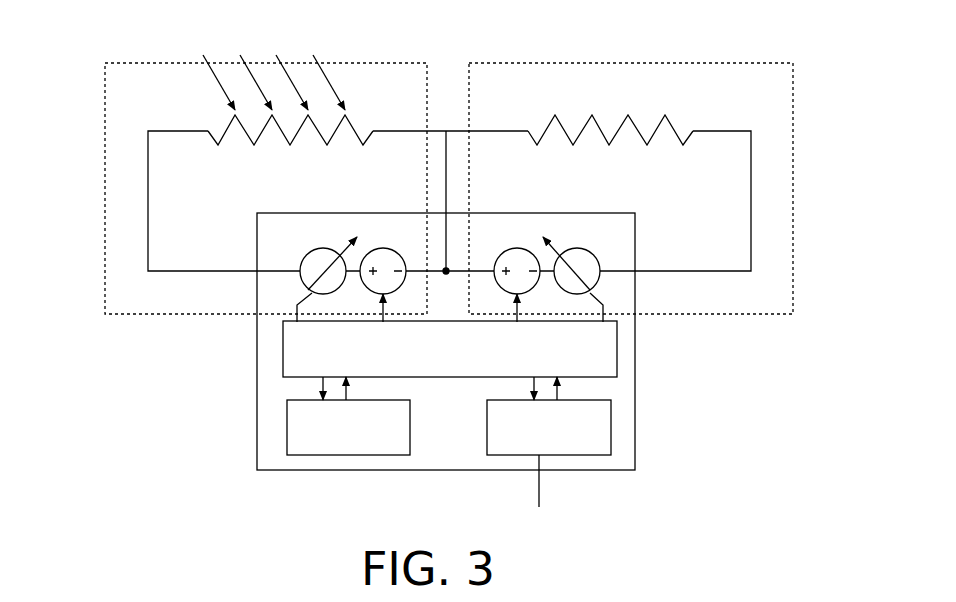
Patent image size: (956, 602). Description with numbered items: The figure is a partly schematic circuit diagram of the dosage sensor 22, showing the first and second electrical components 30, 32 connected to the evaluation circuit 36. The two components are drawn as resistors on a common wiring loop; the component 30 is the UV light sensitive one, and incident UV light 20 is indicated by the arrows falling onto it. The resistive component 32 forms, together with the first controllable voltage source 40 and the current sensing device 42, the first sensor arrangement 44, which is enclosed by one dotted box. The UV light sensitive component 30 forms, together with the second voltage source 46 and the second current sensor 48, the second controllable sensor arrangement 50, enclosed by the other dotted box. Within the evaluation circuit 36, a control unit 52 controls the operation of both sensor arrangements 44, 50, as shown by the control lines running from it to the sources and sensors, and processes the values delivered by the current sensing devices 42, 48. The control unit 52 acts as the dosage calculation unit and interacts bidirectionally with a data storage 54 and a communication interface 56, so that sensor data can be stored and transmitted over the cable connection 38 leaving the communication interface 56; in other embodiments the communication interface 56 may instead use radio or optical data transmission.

The incident radiation 20 is at (256, 48).
The sensor arrangement 22 is at (97, 182).
The first electrical component 30 is at (360, 128).
The second electrical component 32 is at (537, 128).
The evaluation circuit 36 is at (265, 373).
The cable connection 38 is at (541, 493).
The first controllable voltage source 40 is at (517, 248).
The current sensing device 42 is at (577, 248).
The first sensor arrangement 44 is at (705, 63).
The second voltage source 46 is at (383, 248).
The second current sensor 48 is at (318, 248).
The second controllable sensor arrangement 50 is at (118, 287).
The control unit 52 is at (465, 361).
The data storage 54 is at (374, 441).
The communication interface 56 is at (574, 441).